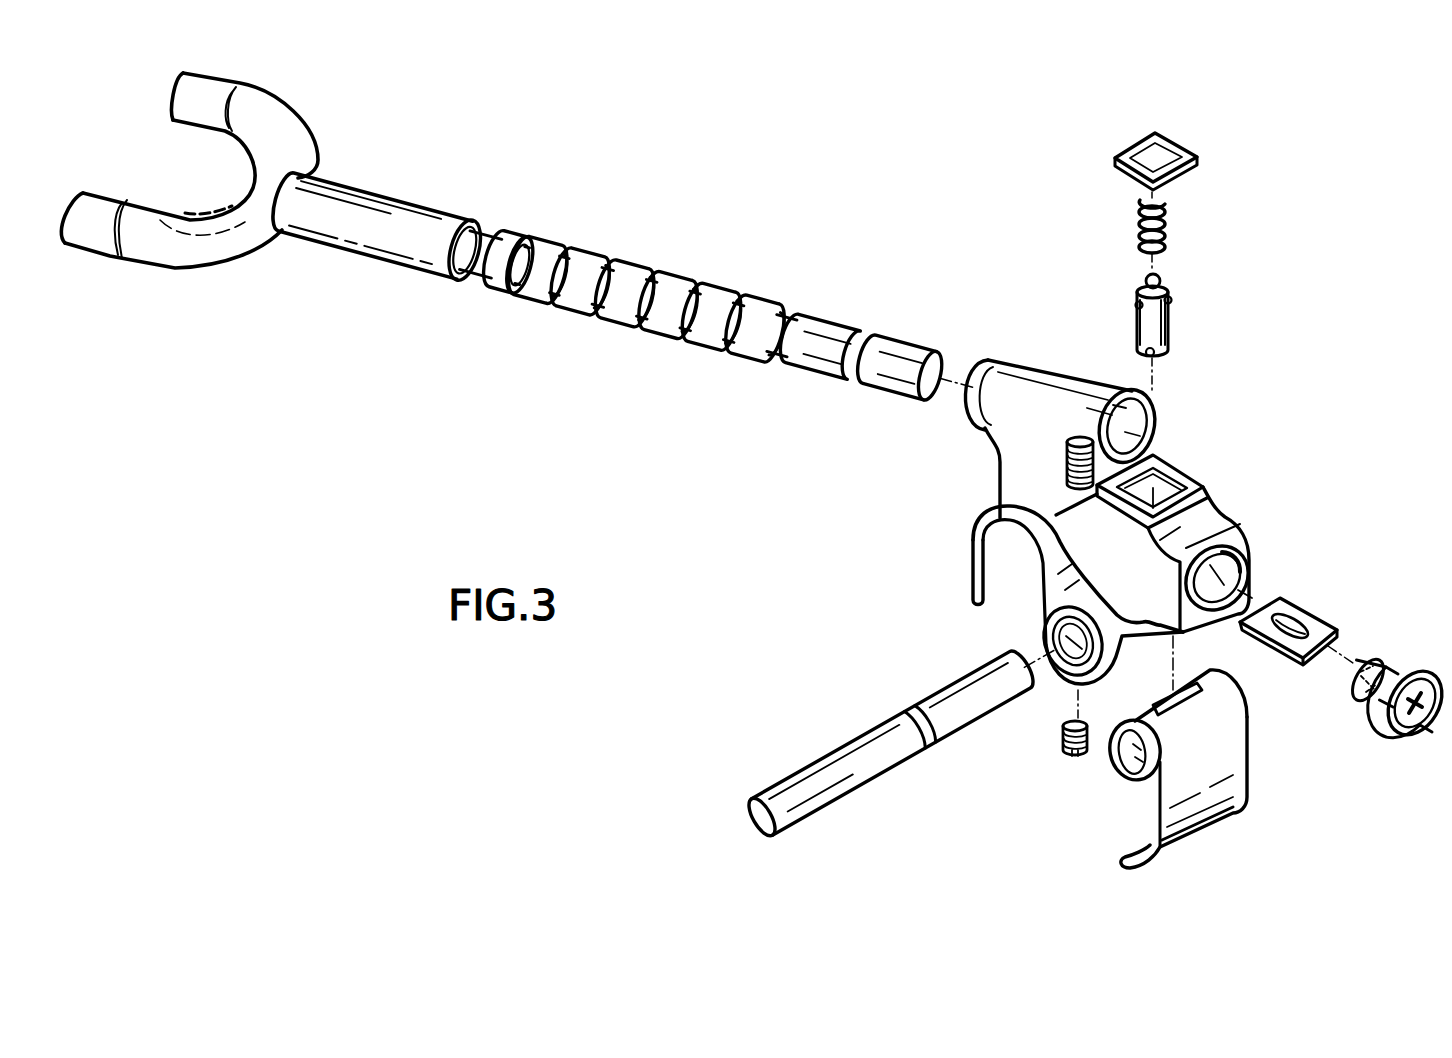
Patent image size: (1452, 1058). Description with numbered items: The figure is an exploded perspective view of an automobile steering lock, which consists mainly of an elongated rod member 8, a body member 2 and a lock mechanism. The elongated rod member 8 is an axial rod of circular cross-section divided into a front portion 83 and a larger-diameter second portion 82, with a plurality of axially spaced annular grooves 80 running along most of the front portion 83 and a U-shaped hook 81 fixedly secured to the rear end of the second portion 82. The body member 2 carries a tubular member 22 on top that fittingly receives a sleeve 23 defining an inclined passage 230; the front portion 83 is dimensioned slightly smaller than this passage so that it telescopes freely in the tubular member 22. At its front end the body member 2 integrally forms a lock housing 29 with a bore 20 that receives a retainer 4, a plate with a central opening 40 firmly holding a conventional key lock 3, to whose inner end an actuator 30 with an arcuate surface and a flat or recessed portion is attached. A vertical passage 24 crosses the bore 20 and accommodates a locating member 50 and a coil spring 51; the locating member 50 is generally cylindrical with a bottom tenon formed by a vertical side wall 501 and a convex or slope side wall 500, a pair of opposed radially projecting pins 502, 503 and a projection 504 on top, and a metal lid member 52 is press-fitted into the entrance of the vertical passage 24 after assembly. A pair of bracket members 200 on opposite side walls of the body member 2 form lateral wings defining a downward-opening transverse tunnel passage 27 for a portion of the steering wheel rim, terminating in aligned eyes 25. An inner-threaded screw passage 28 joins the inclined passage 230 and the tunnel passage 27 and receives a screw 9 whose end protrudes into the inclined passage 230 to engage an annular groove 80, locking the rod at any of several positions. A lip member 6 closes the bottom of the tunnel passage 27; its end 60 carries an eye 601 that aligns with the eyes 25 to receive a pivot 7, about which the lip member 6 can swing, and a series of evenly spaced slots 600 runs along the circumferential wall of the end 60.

The body member 2 is at (1082, 516).
The key lock 3 is at (1387, 720).
The retainer 4 is at (1307, 618).
The lip member 6 is at (1188, 748).
The pivot 7 is at (849, 760).
The elongated rod member 8 is at (629, 255).
The screw 9 is at (1062, 747).
The bore 20 is at (1247, 556).
The tubular member 22 is at (1023, 370).
The sleeve 23 is at (982, 373).
The vertical passage 24 is at (1165, 492).
The eyes 25 is at (1048, 643).
The transverse tunnel passage 27 is at (992, 566).
The screw passage 28 is at (1066, 463).
The lock housing 29 is at (1244, 524).
The actuator 30 is at (1354, 686).
The central opening 40 is at (1293, 622).
The locating member 50 is at (1148, 296).
The coil spring 51 is at (1170, 223).
The lid member 52 is at (1183, 143).
The end of the lip member 60 is at (1248, 698).
The annular grooves 80 is at (523, 243).
The U-shaped hook 81 is at (291, 128).
The second portion 82 is at (417, 208).
The front portion 83 is at (731, 293).
The bracket members 200 is at (982, 512).
The inclined passage 230 is at (1130, 430).
The convex or slope side wall 500 is at (1136, 347).
The vertical side wall 501 is at (1160, 353).
The pin 502 is at (1134, 303).
The pin 503 is at (1172, 288).
The projection 504 is at (1150, 276).
The slots 600 is at (1180, 692).
The eye 601 is at (1117, 767).